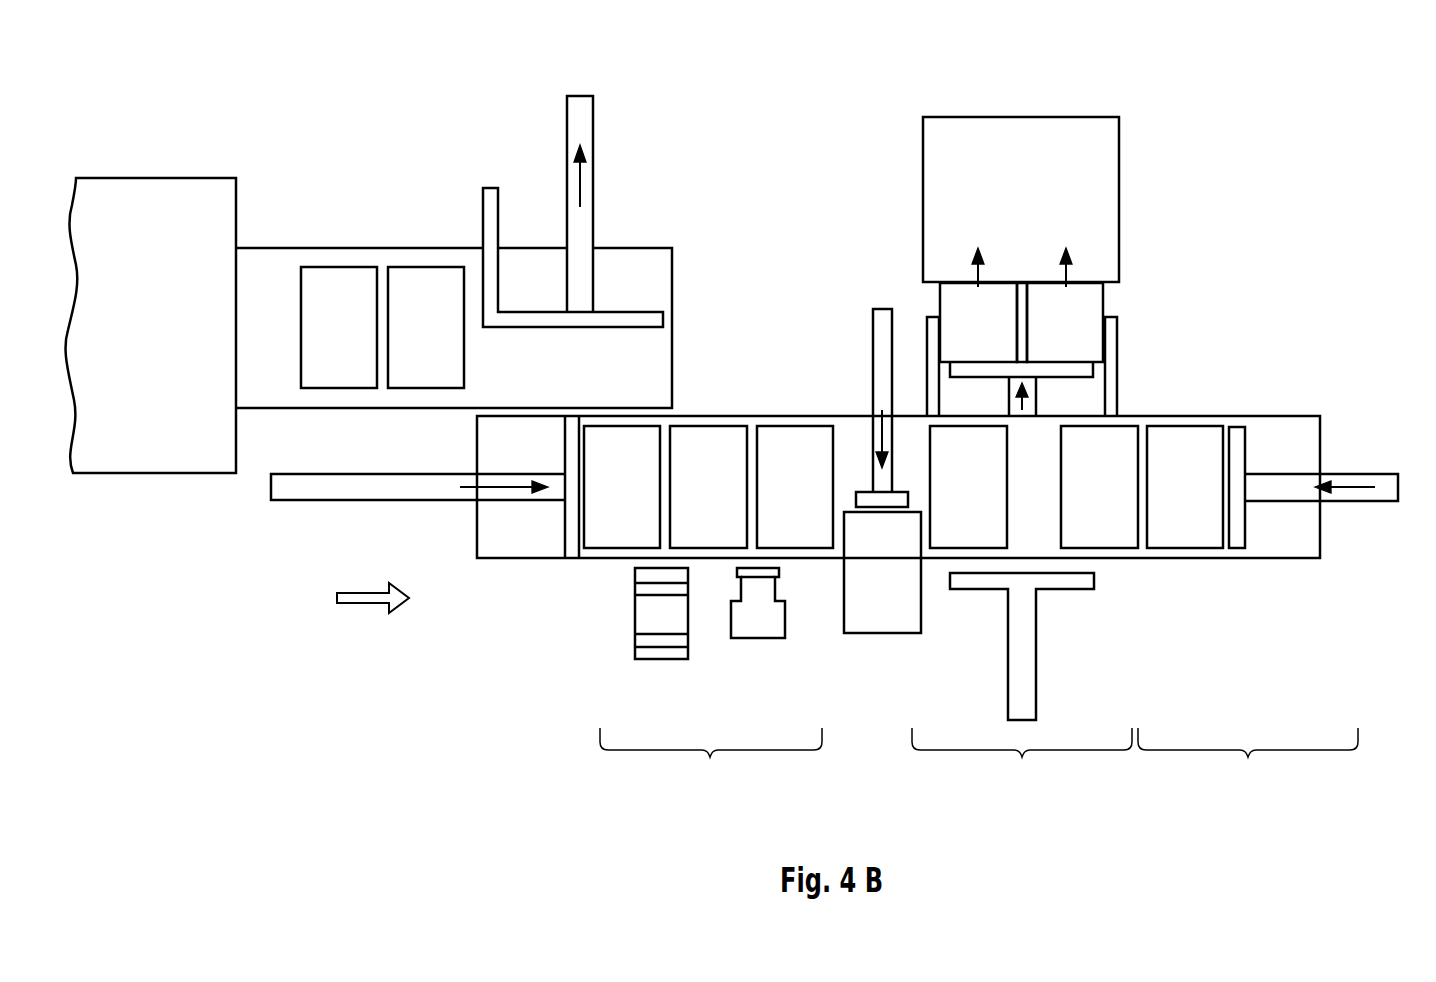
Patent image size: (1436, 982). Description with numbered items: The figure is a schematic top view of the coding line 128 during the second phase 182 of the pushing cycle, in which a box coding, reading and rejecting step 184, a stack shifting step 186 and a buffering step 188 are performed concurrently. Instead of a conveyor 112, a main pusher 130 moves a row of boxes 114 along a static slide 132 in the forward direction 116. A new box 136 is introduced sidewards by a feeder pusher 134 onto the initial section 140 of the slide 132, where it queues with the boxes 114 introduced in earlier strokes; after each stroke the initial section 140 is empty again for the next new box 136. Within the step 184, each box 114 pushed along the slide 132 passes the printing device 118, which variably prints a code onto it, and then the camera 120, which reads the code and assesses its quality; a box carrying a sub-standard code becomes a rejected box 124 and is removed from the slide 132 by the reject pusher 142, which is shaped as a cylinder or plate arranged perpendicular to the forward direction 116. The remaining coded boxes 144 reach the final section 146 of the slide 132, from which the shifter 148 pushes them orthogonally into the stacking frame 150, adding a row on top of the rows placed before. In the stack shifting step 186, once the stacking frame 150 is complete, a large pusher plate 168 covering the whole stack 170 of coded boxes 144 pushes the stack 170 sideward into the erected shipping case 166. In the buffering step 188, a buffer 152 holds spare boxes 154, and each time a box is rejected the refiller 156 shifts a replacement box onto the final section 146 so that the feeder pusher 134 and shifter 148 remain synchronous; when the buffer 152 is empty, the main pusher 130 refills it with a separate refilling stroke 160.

The conveyor 112 is at (271, 260).
The box 114 is at (604, 477).
The forward direction 116 is at (367, 593).
The printing device 118 is at (660, 655).
The camera 120 is at (757, 628).
The rejected box 124 is at (863, 555).
The coding line 128 is at (1334, 99).
The main pusher 130 is at (573, 555).
The slide 132 is at (528, 545).
The feeder pusher 134 is at (490, 194).
The new box 136 is at (320, 322).
The initial section 140 is at (508, 530).
The reject pusher 142 is at (880, 320).
The coded box 144 is at (689, 477).
The final section 146 is at (939, 576).
The shifter 148 is at (1062, 585).
The stacking frame 150 is at (1112, 340).
The buffer 152 is at (1340, 535).
The spare box 154 is at (1080, 477).
The refiller 156 is at (1237, 432).
The refilling stroke 160 is at (1350, 478).
The shipping case 166 is at (1017, 138).
The pusher plate 168 is at (1067, 372).
The stack 170 is at (1112, 303).
The second phase 182 is at (1268, 165).
The box coding, reading and rejecting step 184 is at (710, 757).
The stack shifting step 186 is at (1022, 757).
The buffering step 188 is at (1248, 757).